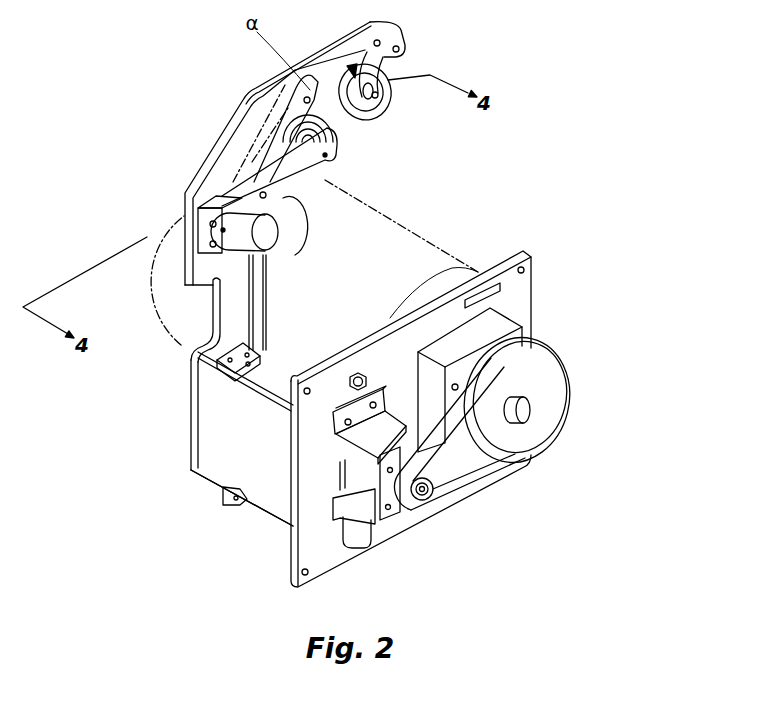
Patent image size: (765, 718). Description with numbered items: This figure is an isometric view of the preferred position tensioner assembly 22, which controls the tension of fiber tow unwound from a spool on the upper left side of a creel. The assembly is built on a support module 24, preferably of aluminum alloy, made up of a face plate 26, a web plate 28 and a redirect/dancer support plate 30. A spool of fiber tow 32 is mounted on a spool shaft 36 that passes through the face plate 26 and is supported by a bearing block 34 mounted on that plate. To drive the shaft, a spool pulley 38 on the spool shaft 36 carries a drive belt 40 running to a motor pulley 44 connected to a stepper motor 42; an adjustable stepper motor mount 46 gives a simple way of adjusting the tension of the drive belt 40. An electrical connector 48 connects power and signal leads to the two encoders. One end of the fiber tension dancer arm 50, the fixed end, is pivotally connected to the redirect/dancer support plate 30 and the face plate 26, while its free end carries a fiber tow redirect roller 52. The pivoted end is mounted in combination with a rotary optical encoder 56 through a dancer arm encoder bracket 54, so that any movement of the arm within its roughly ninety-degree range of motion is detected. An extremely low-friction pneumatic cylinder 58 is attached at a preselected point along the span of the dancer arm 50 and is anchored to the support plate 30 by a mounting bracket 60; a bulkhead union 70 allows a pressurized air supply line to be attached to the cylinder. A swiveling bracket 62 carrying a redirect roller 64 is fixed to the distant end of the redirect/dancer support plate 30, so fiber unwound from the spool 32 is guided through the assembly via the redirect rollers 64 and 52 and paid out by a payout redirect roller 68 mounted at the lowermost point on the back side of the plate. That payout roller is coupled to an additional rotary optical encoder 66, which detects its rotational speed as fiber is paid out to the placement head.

The position tensioner assembly 22 is at (133, 456).
The support module 24 is at (187, 423).
The face plate 26 is at (376, 367).
The web plate 28 is at (222, 452).
The redirect/dancer support plate 30 is at (227, 297).
The spool of fiber tow 32 is at (344, 302).
The bearing block 34 is at (503, 312).
The spool shaft 36 is at (531, 411).
The spool pulley 38 is at (530, 430).
The drive belt 40 is at (560, 352).
The stepper motor 42 is at (354, 522).
The motor pulley 44 is at (424, 501).
The adjustable stepper motor mount 46 is at (347, 449).
The electrical connector 48 is at (343, 528).
The fiber tension dancer arm 50 is at (332, 167).
The fiber tow redirect roller 52 is at (333, 131).
The dancer arm encoder bracket 54 is at (197, 215).
The rotary optical encoder 56 is at (220, 170).
The pneumatic cylinder 58 is at (280, 277).
The mounting bracket 60 is at (258, 360).
The swiveling bracket 62 is at (407, 47).
The redirect roller 64 is at (390, 79).
The rotary optical encoder 66 is at (222, 497).
The payout redirect roller 68 is at (221, 488).
The bulkhead union 70 is at (349, 382).